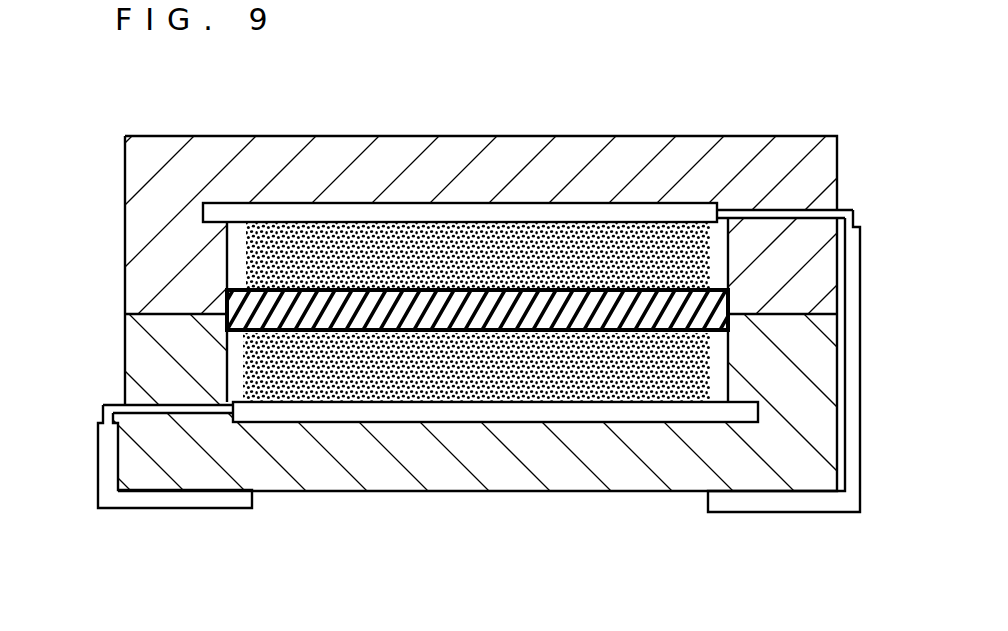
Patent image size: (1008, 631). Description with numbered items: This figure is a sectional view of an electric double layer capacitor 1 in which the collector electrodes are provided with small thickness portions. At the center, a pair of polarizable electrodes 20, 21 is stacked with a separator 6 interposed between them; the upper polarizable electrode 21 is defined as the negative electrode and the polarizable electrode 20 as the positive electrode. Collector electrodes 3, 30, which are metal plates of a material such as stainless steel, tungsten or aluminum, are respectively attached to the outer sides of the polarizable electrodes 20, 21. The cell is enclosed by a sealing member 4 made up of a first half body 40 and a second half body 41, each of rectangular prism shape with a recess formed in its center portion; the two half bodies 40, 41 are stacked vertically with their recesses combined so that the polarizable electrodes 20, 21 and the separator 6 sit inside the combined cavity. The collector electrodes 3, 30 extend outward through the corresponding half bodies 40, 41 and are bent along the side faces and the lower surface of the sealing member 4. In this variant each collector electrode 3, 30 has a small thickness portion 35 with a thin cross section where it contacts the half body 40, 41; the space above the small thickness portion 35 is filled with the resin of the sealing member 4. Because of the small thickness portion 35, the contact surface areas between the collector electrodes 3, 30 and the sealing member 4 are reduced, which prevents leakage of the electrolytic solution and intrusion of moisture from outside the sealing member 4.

The electric double layer capacitor 1 is at (673, 532).
The collector electrode 3 is at (850, 348).
The sealing member 4 is at (493, 313).
The separator 6 is at (728, 300).
The polarizable electrode 20 is at (457, 382).
The polarizable electrode 21 is at (510, 232).
The collector electrode 30 is at (108, 462).
The small thickness portion 35 is at (797, 208).
The first half body 40 is at (145, 278).
The second half body 41 is at (490, 402).